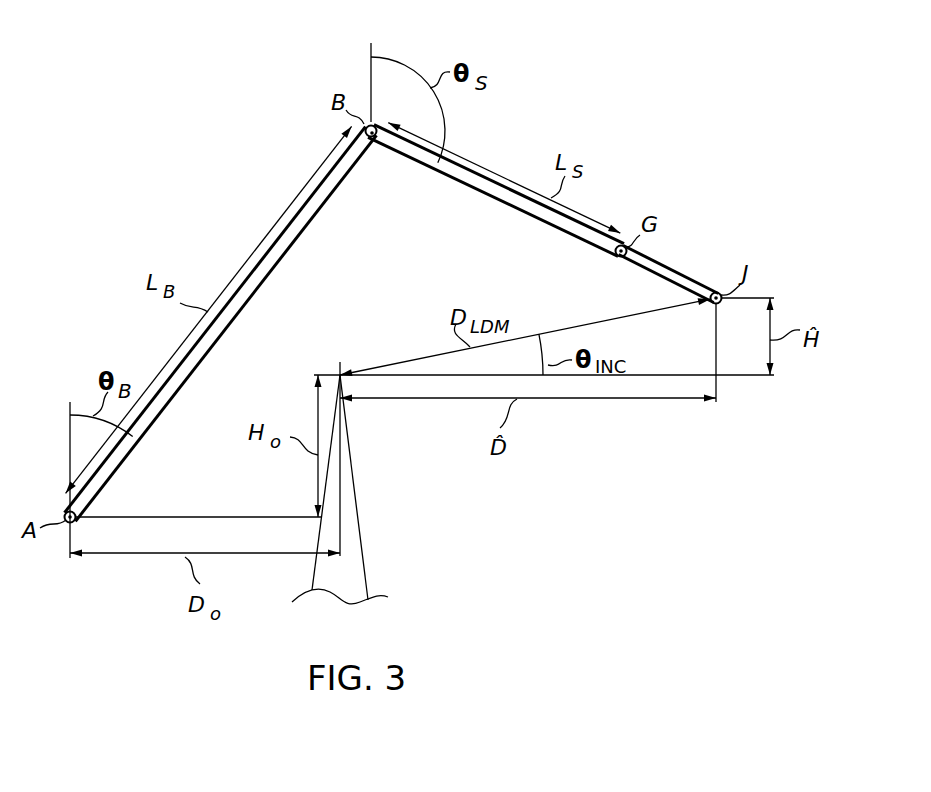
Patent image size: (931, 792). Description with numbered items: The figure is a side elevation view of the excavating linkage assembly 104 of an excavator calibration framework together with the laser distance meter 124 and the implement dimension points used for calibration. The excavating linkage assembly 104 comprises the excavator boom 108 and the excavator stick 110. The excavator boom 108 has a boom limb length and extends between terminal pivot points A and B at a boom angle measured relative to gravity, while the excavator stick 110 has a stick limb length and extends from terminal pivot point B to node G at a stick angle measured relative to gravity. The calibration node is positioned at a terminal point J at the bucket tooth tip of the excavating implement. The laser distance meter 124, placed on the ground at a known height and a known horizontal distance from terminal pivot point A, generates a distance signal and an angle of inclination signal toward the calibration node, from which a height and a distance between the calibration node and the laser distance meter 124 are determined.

The excavating linkage assembly 104 is at (153, 104).
The excavator boom 108 is at (237, 322).
The excavator stick 110 is at (467, 188).
The laser distance meter (LDM) 124 is at (362, 535).